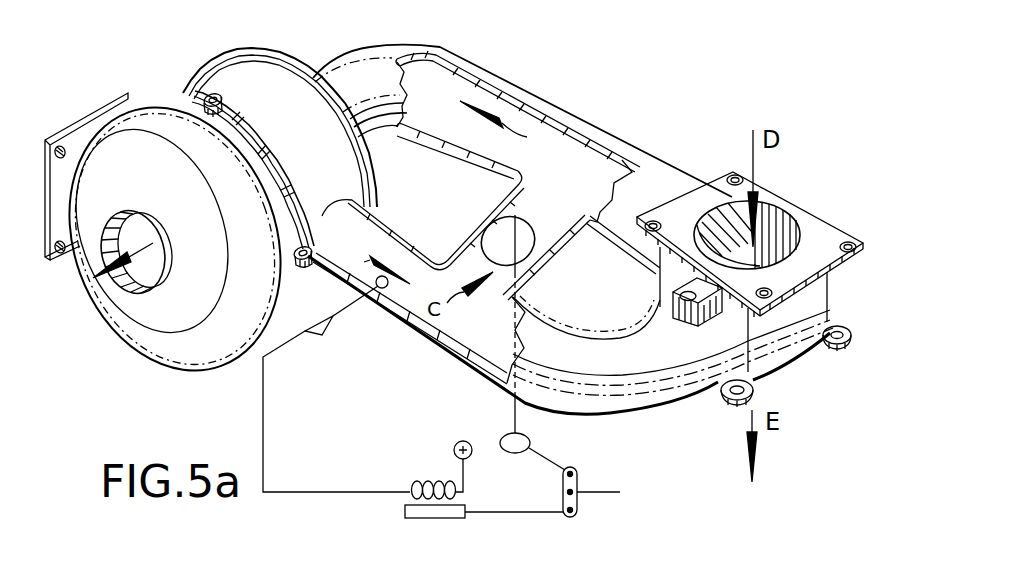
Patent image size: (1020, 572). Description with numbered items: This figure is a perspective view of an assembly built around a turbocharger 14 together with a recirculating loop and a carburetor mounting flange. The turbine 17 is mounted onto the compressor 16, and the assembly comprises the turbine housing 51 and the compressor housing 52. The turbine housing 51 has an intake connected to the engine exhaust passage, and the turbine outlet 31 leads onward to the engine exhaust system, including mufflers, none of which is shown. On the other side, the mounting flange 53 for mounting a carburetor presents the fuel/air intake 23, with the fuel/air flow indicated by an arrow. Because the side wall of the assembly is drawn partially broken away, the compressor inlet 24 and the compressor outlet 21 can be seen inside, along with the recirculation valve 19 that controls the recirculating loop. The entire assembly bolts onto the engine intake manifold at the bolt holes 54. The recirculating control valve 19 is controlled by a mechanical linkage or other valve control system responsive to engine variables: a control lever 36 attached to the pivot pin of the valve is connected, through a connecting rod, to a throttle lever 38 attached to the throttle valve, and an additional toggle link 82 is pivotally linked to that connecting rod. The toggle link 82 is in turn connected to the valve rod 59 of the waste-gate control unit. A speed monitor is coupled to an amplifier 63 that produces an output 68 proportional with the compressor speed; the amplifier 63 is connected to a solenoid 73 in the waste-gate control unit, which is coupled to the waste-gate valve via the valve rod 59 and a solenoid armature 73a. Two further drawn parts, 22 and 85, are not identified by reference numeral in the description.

The turbocharger 14 is at (208, 95).
The compressor 16 is at (280, 72).
The turbine 17 is at (155, 398).
The recirculating control valve 19 is at (493, 238).
The compressor outlet 21 is at (410, 300).
The duct housing 22 is at (558, 158).
The fuel/air intake 23 is at (780, 217).
The compressor inlet 24 is at (417, 50).
The turbine outlet 31 is at (125, 270).
The control lever 36 is at (545, 455).
The throttle lever 38 is at (620, 493).
The turbine housing 51 is at (92, 113).
The compressor housing 52 is at (227, 90).
The mounting flange 53 is at (833, 238).
The bolt holes 54 is at (851, 337).
The valve rod 59 is at (495, 508).
The amplifier 63 is at (315, 337).
The output 68 is at (263, 380).
The solenoid 73 is at (417, 483).
The solenoid armature 73a is at (445, 519).
The toggle link 82 is at (580, 476).
The pivot hole 85 is at (380, 289).